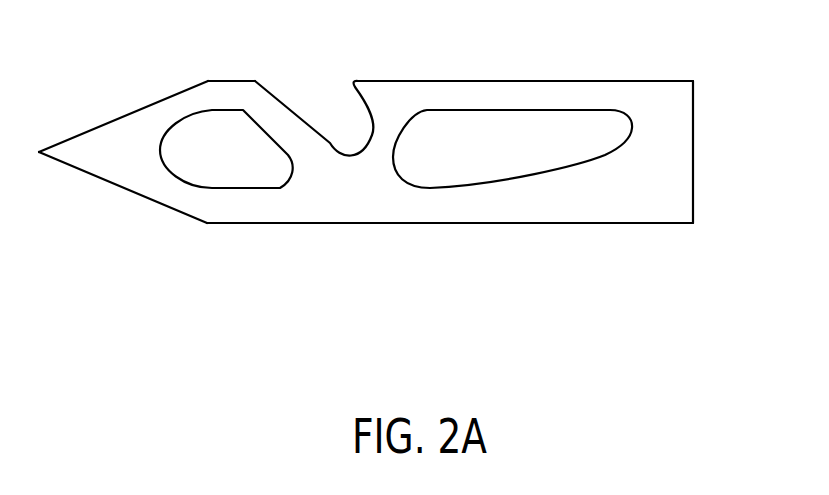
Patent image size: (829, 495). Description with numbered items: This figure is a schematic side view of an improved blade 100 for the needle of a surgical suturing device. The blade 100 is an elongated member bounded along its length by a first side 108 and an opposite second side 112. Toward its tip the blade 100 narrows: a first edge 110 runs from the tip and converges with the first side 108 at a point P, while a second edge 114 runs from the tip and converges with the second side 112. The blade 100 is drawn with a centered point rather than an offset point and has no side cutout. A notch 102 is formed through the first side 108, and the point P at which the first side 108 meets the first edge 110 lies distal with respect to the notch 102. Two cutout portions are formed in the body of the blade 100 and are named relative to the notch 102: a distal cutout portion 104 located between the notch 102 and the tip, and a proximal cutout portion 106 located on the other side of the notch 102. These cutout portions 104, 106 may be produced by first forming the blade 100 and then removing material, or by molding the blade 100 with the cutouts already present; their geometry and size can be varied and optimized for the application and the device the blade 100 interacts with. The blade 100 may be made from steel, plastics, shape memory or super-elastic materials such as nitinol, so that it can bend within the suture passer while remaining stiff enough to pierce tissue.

The blade 100 is at (666, 102).
The notch 102 is at (325, 92).
The distal cutout portion 104 is at (197, 143).
The proximal cutout portion 106 is at (585, 122).
The first side 108 is at (460, 80).
The first edge 110 is at (107, 122).
The second side 112 is at (455, 205).
The second edge 114 is at (112, 185).
The point P is at (216, 80).